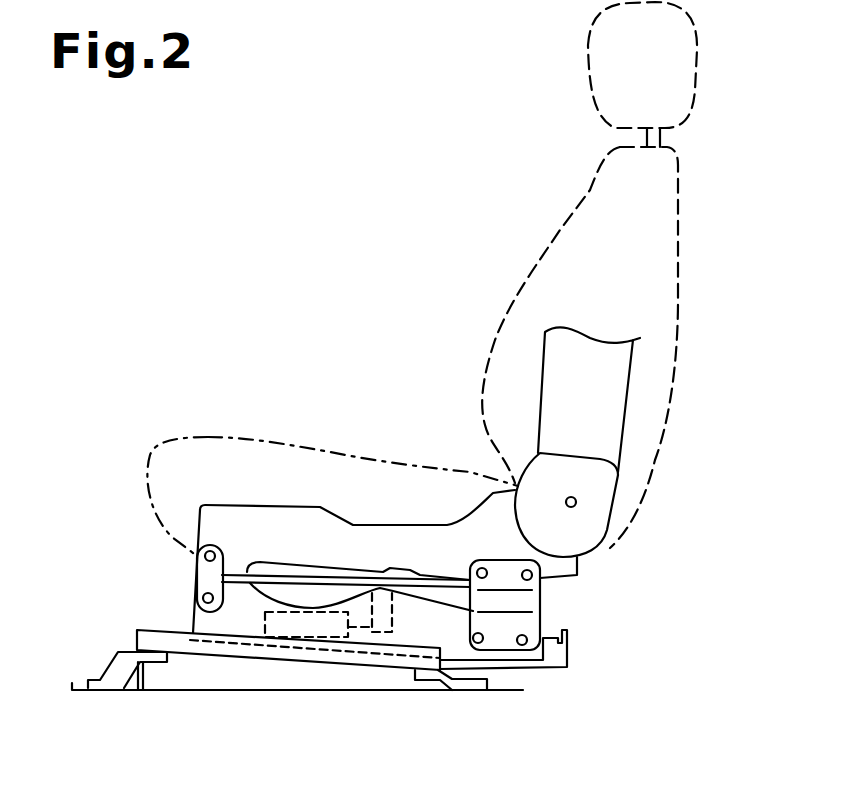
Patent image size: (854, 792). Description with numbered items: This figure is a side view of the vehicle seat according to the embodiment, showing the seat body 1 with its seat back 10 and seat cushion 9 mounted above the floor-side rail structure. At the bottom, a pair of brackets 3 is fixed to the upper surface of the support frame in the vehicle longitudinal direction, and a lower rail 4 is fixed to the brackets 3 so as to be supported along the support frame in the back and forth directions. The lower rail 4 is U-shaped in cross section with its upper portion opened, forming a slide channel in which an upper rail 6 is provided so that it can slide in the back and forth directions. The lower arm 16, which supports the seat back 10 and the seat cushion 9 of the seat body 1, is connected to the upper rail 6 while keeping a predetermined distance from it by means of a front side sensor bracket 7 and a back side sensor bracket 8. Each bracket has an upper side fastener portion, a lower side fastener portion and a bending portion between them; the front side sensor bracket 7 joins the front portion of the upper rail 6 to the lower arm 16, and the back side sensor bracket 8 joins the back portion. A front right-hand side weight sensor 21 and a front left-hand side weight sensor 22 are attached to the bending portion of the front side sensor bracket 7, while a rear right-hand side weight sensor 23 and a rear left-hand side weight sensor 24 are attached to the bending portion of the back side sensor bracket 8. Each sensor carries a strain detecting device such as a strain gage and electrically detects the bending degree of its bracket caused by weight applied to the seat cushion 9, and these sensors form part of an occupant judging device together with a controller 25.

The seat body 1 is at (493, 228).
The seat back 10 is at (680, 258).
The seat cushion 9 is at (208, 435).
The lower arm 16 is at (297, 520).
The front side sensor bracket 7 is at (218, 546).
The front left-hand side weight sensor 22 is at (220, 577).
The front right-hand side weight sensor 21 is at (265, 579).
The rear left-hand side weight sensor 24 is at (527, 607).
The rear right-hand side weight sensor 23 is at (461, 604).
The back side sensor bracket 8 is at (503, 562).
The controller 25 is at (265, 612).
The lower rail 4 is at (141, 628).
The bracket 3 is at (100, 678).
The upper rail 6 is at (550, 669).